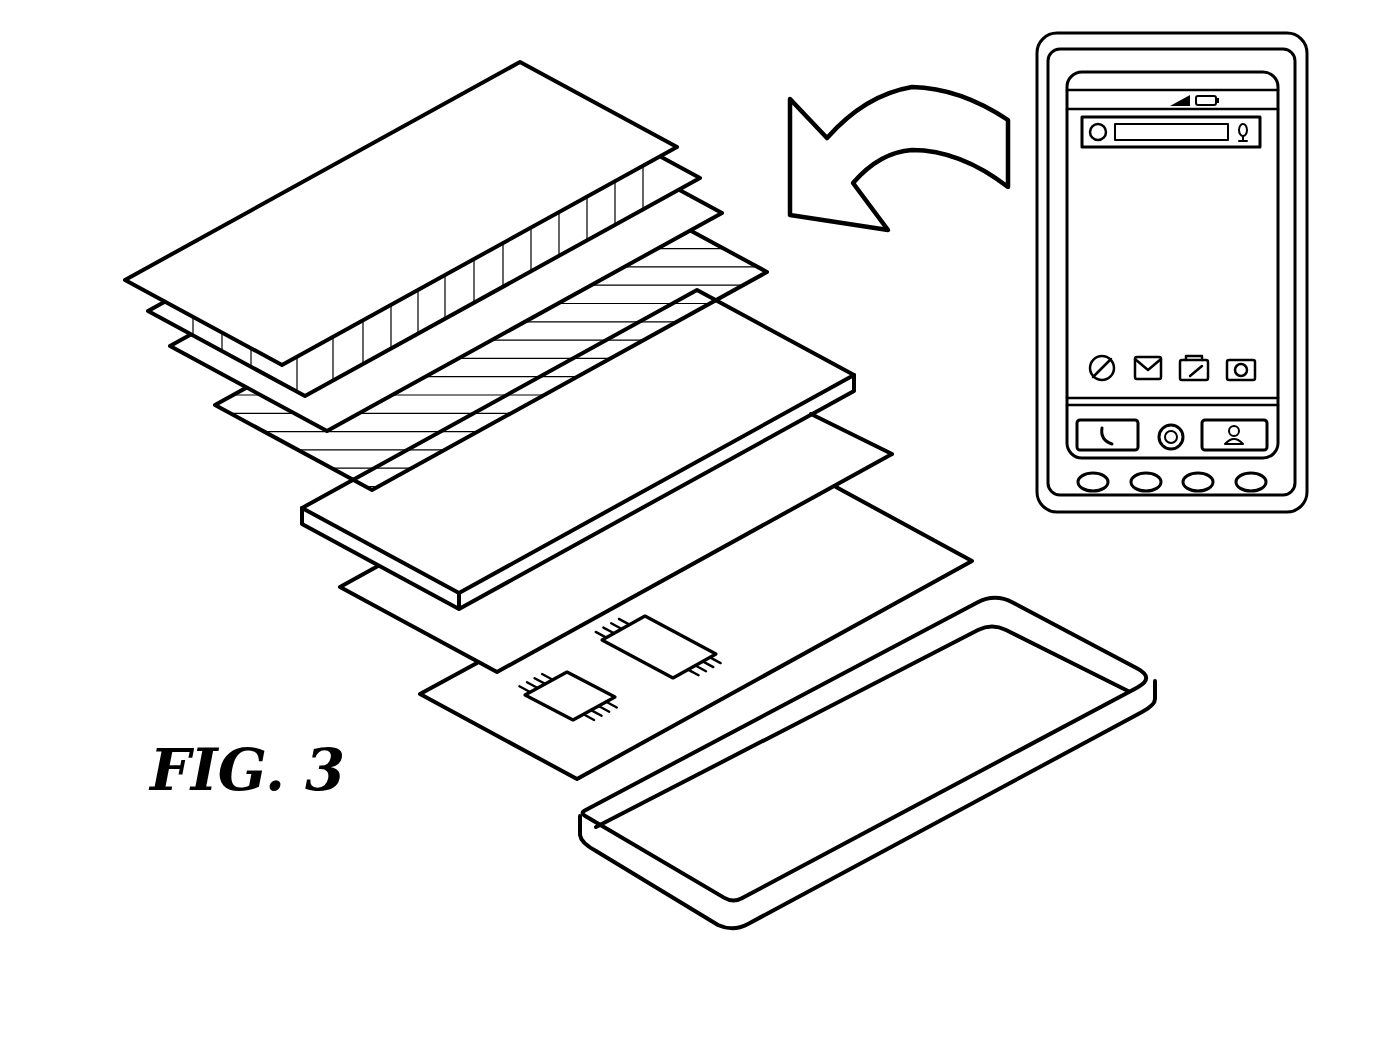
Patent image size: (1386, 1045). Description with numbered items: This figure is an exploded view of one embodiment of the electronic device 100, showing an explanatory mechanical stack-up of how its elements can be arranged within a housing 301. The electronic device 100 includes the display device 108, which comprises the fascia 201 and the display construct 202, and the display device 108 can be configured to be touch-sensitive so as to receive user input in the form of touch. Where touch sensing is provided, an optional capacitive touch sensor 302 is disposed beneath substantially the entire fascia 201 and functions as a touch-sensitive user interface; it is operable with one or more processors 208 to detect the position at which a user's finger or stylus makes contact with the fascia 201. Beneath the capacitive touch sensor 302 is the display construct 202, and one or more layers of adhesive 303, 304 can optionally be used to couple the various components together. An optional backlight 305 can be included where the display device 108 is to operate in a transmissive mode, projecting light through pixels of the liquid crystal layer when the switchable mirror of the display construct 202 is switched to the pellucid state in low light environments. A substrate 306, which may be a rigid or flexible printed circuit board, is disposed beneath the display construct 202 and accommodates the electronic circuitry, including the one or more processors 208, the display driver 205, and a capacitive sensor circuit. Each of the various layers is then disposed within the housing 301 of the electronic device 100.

The electronic device 100 is at (1338, 158).
The display device 108 is at (598, 55).
The fascia 201 is at (470, 132).
The display construct 202 is at (730, 372).
The display driver 205 is at (560, 695).
The one or more processors 208 is at (673, 648).
The housing 301 is at (1128, 652).
The capacitive touch sensor 302 is at (688, 213).
The layer of adhesive 303 is at (663, 180).
The layer of adhesive 304 is at (283, 422).
The backlight 305 is at (390, 598).
The substrate 306 is at (858, 542).